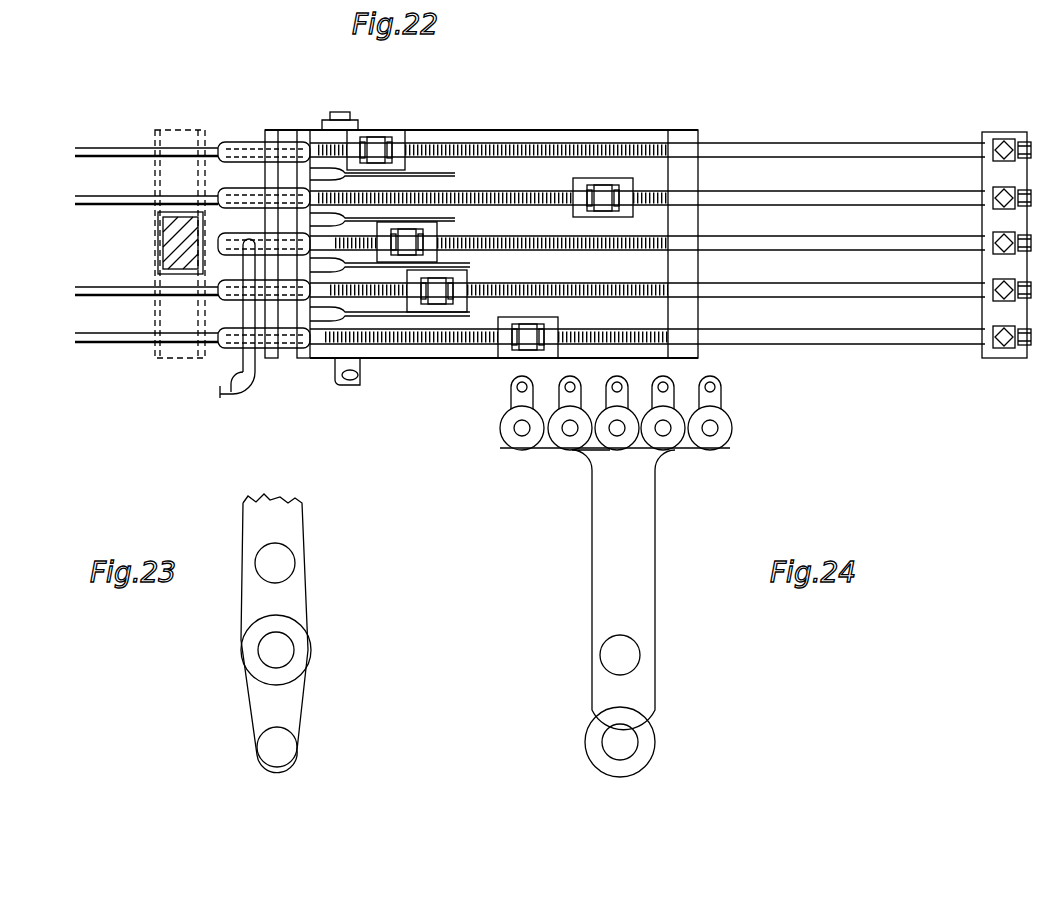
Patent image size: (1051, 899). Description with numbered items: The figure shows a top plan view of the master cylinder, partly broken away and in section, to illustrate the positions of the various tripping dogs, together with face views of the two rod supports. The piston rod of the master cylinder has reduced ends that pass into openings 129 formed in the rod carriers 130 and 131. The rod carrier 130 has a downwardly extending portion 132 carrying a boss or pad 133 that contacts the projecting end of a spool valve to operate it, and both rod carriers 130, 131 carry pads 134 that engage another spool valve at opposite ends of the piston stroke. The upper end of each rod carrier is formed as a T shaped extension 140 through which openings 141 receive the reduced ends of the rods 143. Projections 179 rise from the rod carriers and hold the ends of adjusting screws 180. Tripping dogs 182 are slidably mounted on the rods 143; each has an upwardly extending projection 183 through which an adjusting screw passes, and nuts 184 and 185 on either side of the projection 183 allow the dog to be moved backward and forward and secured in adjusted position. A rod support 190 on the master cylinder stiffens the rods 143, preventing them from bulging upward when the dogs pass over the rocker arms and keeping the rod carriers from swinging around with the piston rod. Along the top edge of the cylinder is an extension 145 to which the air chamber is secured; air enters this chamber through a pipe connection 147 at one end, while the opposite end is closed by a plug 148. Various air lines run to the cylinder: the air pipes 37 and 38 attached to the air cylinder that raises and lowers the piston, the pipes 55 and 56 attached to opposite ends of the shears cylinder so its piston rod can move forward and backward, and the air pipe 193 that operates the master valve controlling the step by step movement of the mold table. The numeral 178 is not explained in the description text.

In FIG. 22, the air pipe 37 is at (92, 156).
In FIG. 22, the air pipe 38 is at (86, 204).
In FIG. 22, the air pipe 56 is at (88, 294).
In FIG. 22, the air pipe 193 is at (97, 348).
In FIG. 22, the rod carrier 131 is at (162, 242).
In FIG. 24, the rod carrier 131 is at (592, 533).
In FIG. 22, the air pipe 55 is at (232, 398).
In FIG. 22, the extension 145 is at (583, 130).
In FIG. 22, the plug 148 is at (322, 127).
In FIG. 22, the pipe connection 147 is at (358, 368).
In FIG. 22, the tripping dog 182 is at (408, 128).
In FIG. 22, the projection 183 is at (379, 147).
In FIG. 22, the nut 184 is at (585, 205).
In FIG. 22, the nut 185 is at (458, 284).
In FIG. 22, the rod support 190 is at (690, 265).
In FIG. 22, the adjusting screw 180 is at (856, 156).
In FIG. 22, the rod 143 is at (838, 206).
In FIG. 22, the T shaped extension 140 is at (1000, 313).
In FIG. 24, the T shaped extension 140 is at (688, 446).
In FIG. 22, the projection 179 is at (1008, 174).
In FIG. 22, the nut 178 is at (1008, 290).
In FIG. 24, the nut 178 is at (720, 396).
In FIG. 24, the opening 141 is at (714, 428).
In FIG. 23, the rod carrier 130 is at (298, 521).
In FIG. 23, the pad 134 is at (283, 561).
In FIG. 24, the pad 134 is at (632, 651).
In FIG. 23, the opening 129 is at (283, 646).
In FIG. 24, the opening 129 is at (632, 735).
In FIG. 23, the downwardly extending portion 132 is at (290, 704).
In FIG. 23, the boss or pad 133 is at (293, 746).